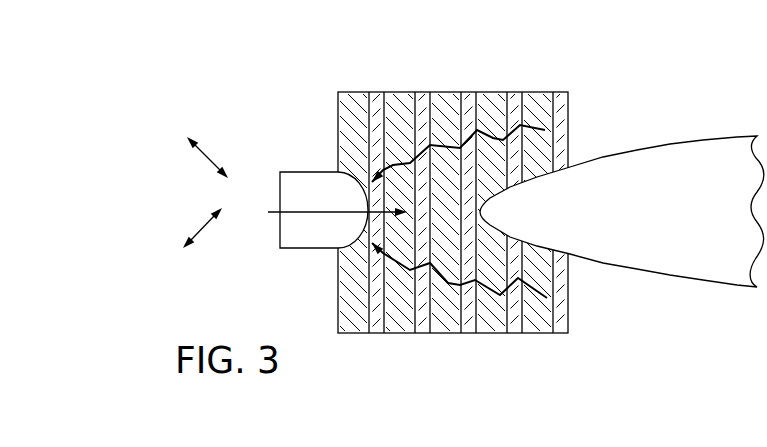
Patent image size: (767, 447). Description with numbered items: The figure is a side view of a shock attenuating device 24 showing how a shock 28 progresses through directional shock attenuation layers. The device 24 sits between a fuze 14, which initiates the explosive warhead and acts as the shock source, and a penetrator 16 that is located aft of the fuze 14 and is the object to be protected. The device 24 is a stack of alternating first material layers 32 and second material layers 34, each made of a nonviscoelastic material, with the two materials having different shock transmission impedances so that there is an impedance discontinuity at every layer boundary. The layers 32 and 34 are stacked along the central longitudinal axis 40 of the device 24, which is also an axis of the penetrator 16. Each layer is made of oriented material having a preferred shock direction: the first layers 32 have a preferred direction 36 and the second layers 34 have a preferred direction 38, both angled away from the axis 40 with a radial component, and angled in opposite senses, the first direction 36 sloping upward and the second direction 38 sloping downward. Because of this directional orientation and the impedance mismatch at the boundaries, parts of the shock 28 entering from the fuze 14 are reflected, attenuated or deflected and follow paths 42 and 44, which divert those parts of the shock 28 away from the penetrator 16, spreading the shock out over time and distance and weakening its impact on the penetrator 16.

The fuze 14 is at (308, 248).
The penetrator 16 is at (635, 167).
The shock attenuating device 24 is at (305, 70).
The shock 28 is at (370, 182).
The first material layers 32 is at (355, 92).
The second material layers 34 is at (515, 92).
The preferred shock direction 36 is at (202, 228).
The preferred shock direction 38 is at (208, 157).
The central longitudinal axis 40 is at (280, 215).
The shock path 42 is at (493, 138).
The shock path 44 is at (446, 284).